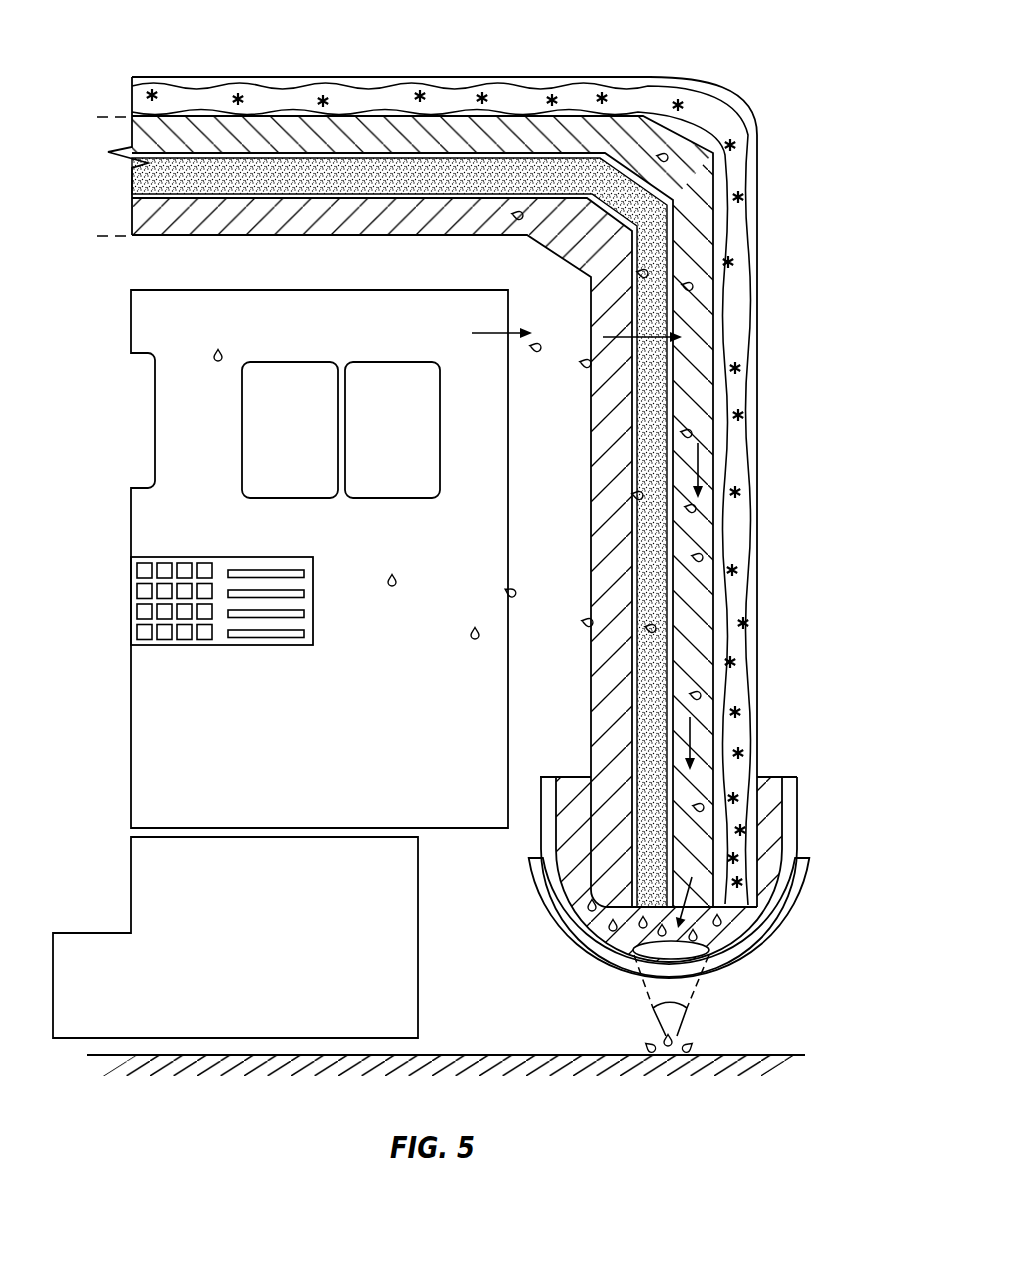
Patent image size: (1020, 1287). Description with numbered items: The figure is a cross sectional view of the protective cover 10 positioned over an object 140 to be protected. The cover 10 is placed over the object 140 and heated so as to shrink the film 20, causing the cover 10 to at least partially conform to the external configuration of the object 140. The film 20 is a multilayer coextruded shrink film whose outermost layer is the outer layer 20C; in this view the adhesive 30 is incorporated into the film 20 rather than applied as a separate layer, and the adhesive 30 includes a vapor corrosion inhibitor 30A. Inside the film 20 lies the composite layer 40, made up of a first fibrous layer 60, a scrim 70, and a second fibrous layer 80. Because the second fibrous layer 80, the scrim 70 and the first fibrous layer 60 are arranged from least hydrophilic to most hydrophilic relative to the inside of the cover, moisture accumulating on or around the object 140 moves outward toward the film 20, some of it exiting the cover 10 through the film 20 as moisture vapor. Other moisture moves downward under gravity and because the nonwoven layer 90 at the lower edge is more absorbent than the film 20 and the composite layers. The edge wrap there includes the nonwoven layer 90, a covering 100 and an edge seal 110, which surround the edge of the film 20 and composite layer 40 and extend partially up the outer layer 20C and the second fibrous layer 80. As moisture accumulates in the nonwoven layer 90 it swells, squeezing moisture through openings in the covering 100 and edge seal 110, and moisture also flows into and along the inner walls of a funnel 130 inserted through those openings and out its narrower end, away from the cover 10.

The protective cover 10 is at (776, 490).
The film 20 is at (343, 83).
The outer layer 20C is at (455, 77).
The adhesive 30 is at (703, 119).
The vapor corrosion inhibitor 30A is at (153, 88).
The composite layer 40 is at (97, 117).
The first fibrous layer 60 is at (693, 242).
The scrim 70 is at (652, 323).
The second fibrous layer 80 is at (612, 405).
The nonwoven layer 90 is at (764, 797).
The covering 100 is at (790, 842).
The edge seal 110 is at (763, 952).
The funnel 130 is at (668, 1017).
The object 140 is at (122, 528).